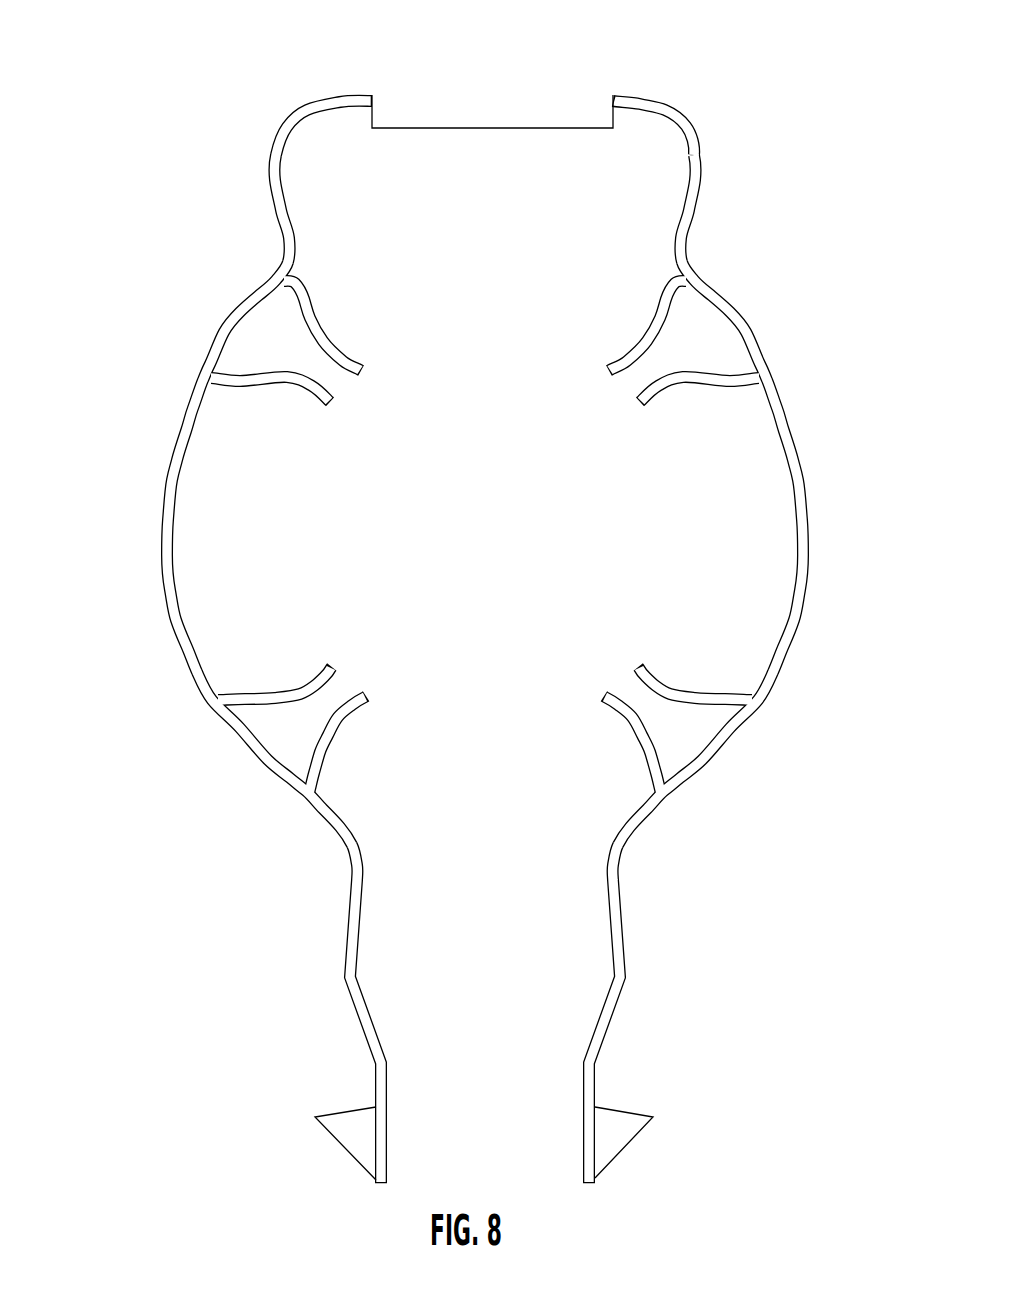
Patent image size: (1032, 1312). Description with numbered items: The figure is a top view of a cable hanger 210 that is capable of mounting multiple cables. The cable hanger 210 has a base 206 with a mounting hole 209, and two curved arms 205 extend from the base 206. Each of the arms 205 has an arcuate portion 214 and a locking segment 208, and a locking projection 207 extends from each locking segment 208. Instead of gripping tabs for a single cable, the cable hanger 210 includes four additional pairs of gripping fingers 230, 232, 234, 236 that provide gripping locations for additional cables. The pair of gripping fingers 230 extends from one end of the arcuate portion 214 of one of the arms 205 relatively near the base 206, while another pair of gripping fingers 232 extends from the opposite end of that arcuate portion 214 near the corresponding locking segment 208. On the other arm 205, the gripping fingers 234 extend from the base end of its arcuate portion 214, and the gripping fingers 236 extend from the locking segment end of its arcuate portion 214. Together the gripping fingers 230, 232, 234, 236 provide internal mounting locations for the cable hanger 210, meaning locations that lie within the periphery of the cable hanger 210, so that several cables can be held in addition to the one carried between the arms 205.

The curved arm 205 is at (704, 235).
The base 206 is at (641, 97).
The locking projection 207 is at (355, 1135).
The locking segment 208 is at (368, 1046).
The mounting hole 209 is at (542, 120).
The cable hanger 210 is at (823, 527).
The arcuate portion 214 is at (167, 613).
The pair of gripping fingers 230 is at (231, 313).
The pair of gripping fingers 232 is at (255, 785).
The gripping fingers 234 is at (749, 312).
The gripping fingers 236 is at (724, 771).